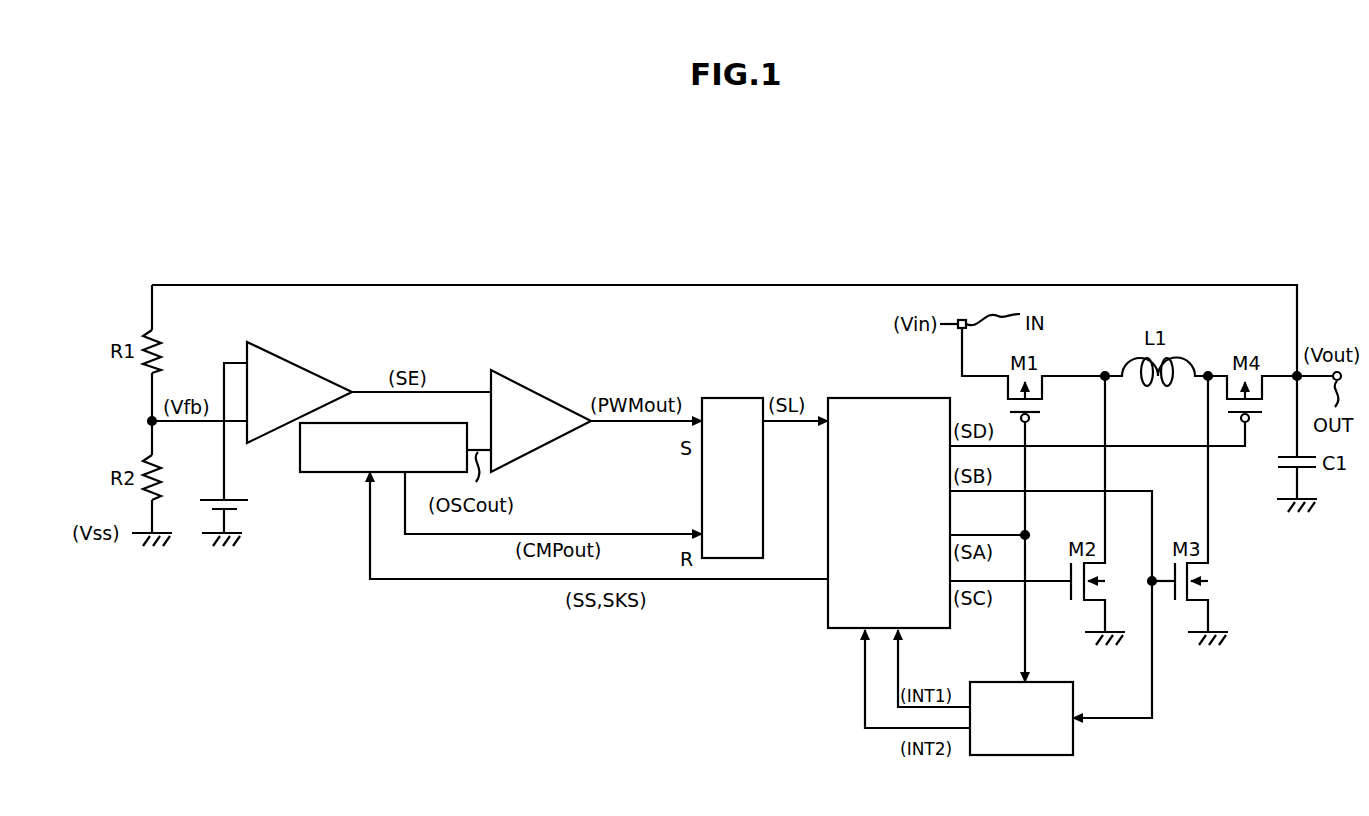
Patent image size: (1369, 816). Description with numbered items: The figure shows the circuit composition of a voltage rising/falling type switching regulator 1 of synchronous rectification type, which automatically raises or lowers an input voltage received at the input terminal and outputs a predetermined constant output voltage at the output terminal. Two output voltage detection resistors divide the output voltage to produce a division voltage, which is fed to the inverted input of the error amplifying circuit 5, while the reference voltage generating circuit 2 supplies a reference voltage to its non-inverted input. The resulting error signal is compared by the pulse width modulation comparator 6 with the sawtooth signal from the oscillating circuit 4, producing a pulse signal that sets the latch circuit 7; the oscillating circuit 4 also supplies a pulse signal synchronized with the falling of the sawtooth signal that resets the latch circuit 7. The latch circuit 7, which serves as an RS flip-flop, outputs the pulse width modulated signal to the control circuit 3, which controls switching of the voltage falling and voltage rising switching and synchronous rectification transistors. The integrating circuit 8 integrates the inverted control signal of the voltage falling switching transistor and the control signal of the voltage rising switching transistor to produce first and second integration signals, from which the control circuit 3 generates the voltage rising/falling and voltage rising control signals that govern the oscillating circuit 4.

The voltage rising/falling type switching regulator 1 is at (999, 244).
The reference voltage generating circuit 2 is at (248, 505).
The control circuit 3 is at (876, 398).
The oscillating circuit 4 is at (338, 474).
The error amplifying circuit 5 is at (295, 360).
The PWM comparator 6 is at (537, 390).
The latch circuit 7 is at (724, 398).
The integrating circuit 8 is at (1023, 757).